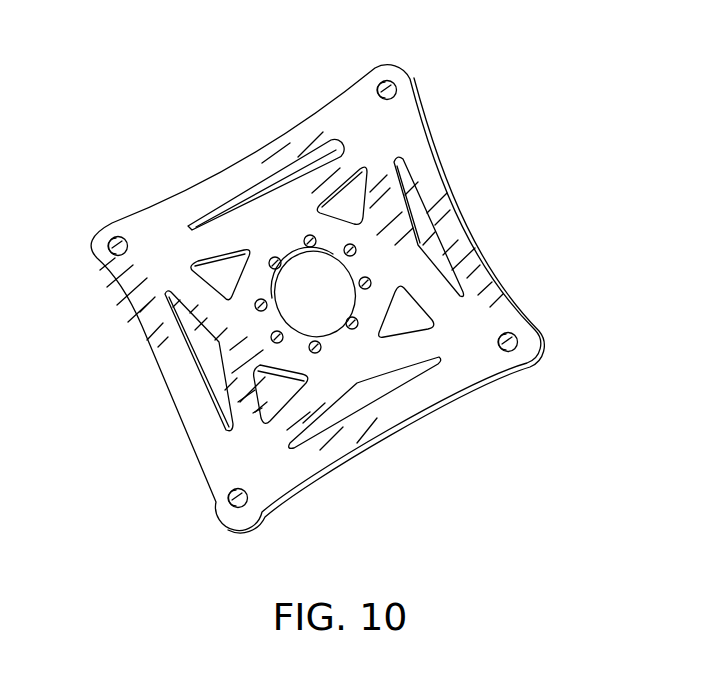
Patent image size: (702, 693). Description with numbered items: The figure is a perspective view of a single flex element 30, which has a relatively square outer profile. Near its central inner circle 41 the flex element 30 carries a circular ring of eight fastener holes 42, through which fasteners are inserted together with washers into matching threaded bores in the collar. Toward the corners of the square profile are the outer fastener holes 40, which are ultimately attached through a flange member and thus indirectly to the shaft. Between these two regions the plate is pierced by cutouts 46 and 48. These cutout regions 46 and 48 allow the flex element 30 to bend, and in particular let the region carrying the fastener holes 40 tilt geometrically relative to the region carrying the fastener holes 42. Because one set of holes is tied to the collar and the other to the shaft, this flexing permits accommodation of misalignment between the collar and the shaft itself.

The flex element 30 is at (457, 208).
The fastener holes 40 is at (395, 89).
The inner circle 41 is at (357, 270).
The fastener holes 42 is at (308, 238).
The cutouts 46 is at (240, 211).
The cutouts 48 is at (220, 283).